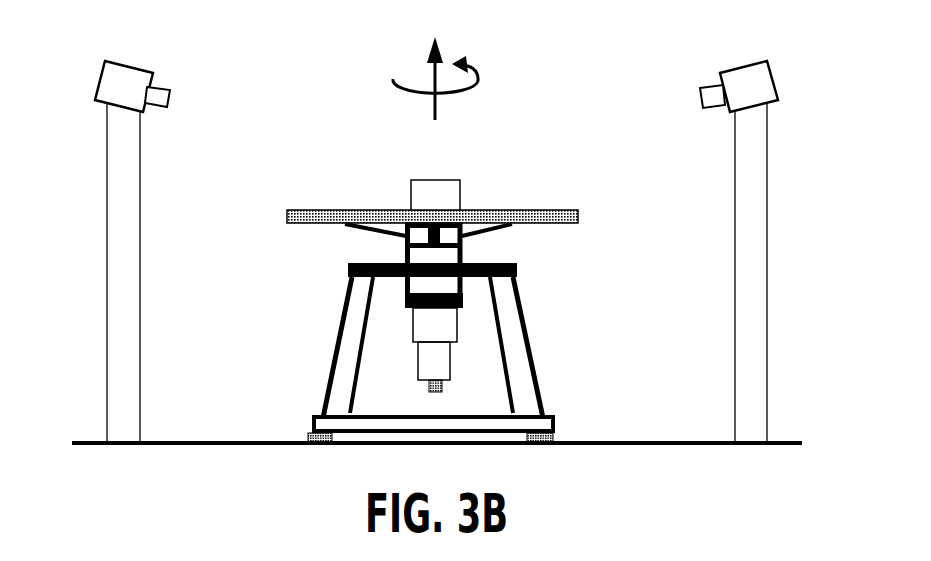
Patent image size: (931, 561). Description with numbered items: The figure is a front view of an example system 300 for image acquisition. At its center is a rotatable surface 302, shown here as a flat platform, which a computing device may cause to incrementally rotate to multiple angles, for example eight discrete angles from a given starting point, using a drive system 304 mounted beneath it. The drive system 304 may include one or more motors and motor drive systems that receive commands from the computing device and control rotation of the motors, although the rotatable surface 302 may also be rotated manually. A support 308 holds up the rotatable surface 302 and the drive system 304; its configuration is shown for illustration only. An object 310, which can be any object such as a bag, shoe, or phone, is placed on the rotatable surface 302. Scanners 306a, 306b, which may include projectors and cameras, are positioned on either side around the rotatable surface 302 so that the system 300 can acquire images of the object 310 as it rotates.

The system for image acquisition 300 is at (300, 110).
The rotatable surface 302 is at (378, 210).
The drive system 304 is at (462, 312).
The scanner 306a is at (100, 82).
The scanner 306b is at (772, 79).
The support 308 is at (337, 357).
The object 310 is at (460, 193).